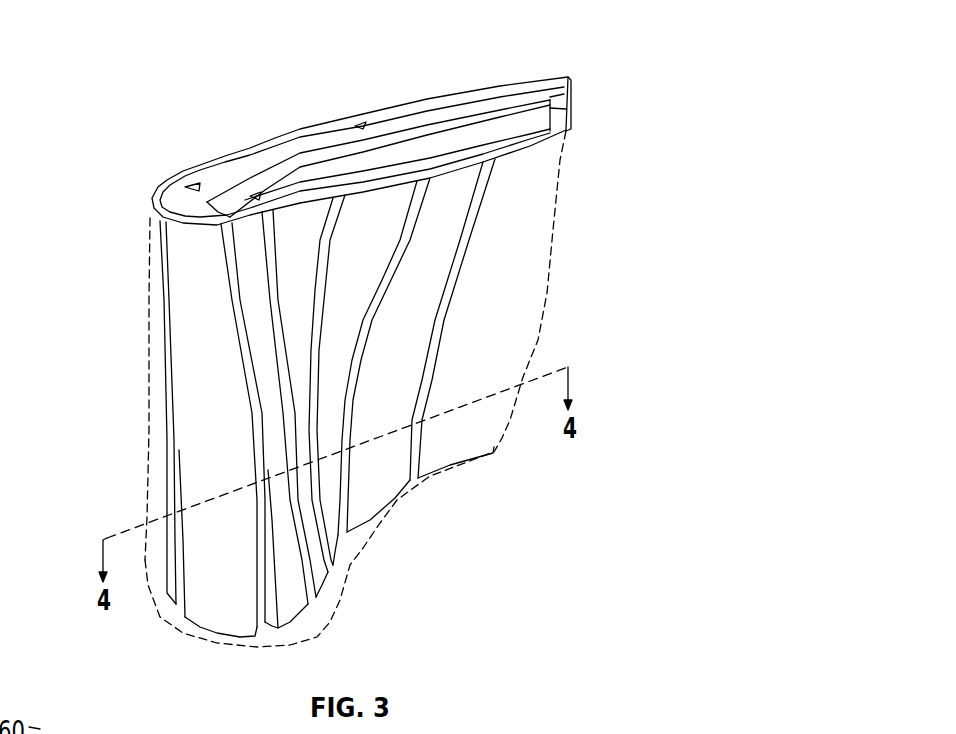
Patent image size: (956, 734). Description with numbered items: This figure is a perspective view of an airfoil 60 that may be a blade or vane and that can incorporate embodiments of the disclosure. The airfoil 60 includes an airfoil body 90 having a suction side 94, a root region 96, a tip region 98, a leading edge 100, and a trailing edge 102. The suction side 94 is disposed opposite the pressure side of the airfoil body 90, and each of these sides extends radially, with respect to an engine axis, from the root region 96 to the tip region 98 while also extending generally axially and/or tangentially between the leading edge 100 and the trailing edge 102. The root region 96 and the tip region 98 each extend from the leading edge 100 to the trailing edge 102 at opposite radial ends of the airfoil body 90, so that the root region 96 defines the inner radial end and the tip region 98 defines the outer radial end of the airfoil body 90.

The airfoil 60 is at (125, 394).
The airfoil body 90 is at (365, 615).
The suction side 94 is at (293, 130).
The root region 96 is at (425, 495).
The tip region 98 is at (435, 91).
The leading edge 100 is at (150, 460).
The trailing edge 102 is at (554, 291).